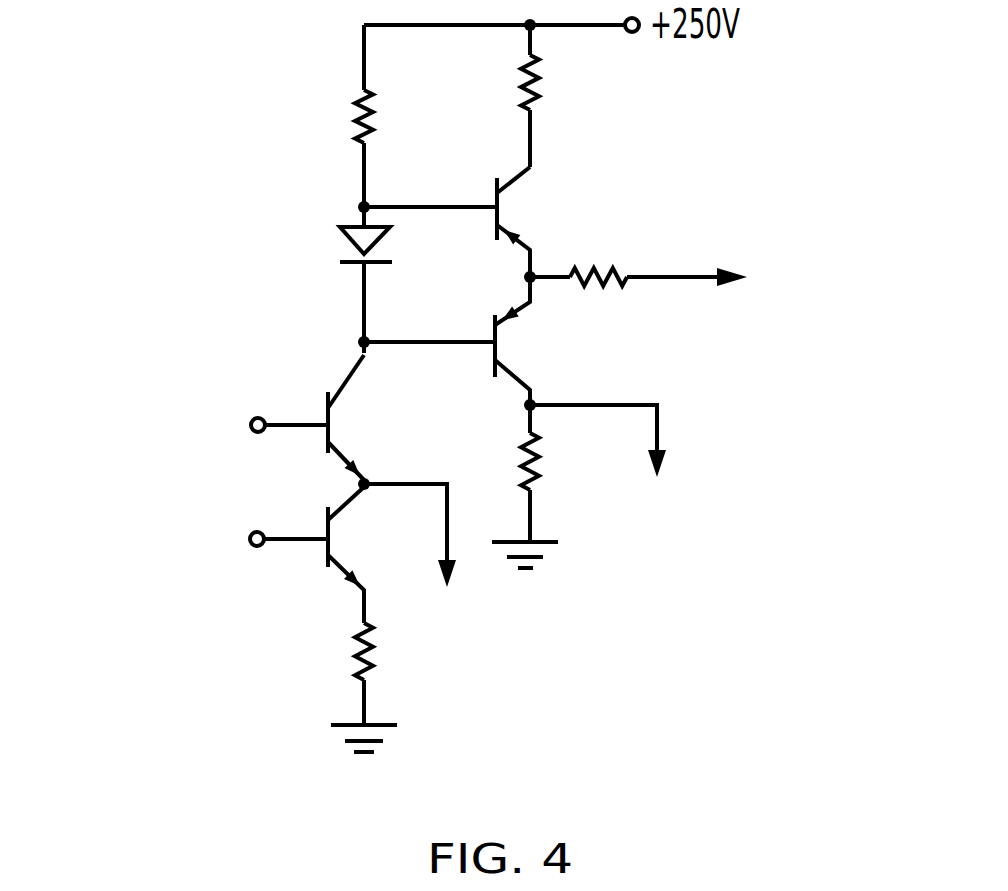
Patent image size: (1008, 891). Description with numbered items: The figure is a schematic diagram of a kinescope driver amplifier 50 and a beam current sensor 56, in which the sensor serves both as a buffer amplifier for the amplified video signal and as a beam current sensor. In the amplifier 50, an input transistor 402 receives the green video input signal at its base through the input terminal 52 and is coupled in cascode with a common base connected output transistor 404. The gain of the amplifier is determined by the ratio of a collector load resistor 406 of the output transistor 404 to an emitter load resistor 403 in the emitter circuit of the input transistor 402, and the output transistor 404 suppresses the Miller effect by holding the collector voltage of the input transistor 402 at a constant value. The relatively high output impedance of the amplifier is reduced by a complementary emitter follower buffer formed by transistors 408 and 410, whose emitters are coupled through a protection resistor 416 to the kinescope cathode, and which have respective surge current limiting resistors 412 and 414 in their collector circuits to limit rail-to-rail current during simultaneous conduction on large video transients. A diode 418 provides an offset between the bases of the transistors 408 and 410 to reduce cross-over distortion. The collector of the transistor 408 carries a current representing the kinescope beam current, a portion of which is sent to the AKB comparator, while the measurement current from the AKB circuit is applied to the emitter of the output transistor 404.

The amplifier 50 is at (210, 222).
The sensor 56 is at (710, 175).
The input transistor 402 is at (405, 555).
The emitter load resistor 403 is at (352, 647).
The output transistor 404 is at (405, 440).
The collector load resistor 406 is at (375, 143).
The transistor 408 is at (567, 364).
The transistor 410 is at (577, 224).
The surge current limiting resistor 412 is at (512, 475).
The surge current limiting resistor 414 is at (543, 110).
The protection resistor 416 is at (597, 293).
The diode 418 is at (348, 232).
The green video input terminal 52 is at (263, 547).